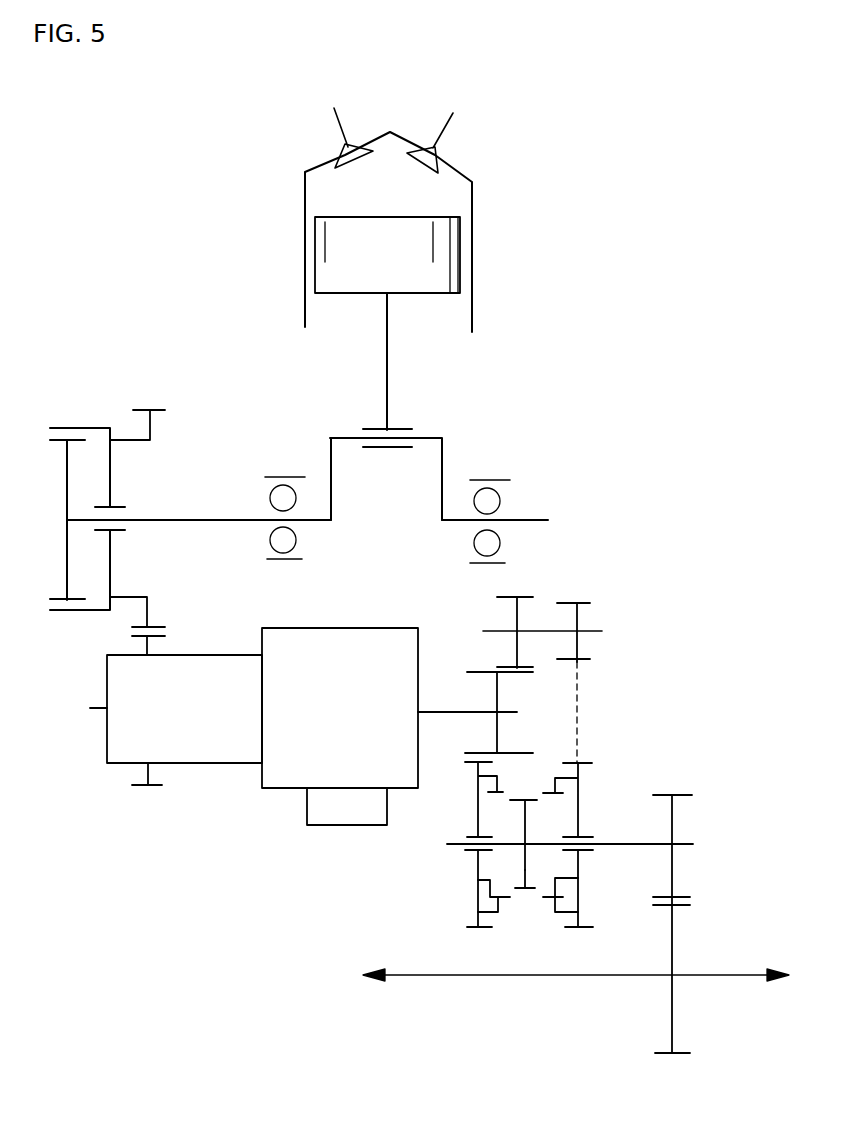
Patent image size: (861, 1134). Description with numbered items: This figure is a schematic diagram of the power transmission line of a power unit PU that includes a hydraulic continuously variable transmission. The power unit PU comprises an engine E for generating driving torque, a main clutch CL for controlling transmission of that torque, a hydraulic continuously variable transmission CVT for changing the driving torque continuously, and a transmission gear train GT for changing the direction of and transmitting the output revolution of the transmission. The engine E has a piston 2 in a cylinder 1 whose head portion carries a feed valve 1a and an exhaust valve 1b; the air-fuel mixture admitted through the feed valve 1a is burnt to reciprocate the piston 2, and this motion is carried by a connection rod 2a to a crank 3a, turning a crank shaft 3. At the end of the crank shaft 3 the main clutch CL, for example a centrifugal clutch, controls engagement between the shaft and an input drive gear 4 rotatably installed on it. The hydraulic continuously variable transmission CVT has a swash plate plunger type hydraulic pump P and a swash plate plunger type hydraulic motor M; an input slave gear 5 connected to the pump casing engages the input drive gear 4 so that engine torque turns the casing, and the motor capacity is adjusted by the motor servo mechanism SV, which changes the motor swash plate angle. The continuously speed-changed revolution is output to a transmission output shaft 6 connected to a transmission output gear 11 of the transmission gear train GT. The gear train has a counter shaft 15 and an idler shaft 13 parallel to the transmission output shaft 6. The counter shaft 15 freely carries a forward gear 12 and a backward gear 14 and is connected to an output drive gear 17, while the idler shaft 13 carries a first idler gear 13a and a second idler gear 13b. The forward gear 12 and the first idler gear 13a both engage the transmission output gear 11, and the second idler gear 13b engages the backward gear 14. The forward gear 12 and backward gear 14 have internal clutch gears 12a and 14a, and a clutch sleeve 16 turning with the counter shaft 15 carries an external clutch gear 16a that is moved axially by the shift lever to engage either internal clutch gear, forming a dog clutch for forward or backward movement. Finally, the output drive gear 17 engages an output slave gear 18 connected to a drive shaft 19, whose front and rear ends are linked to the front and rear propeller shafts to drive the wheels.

The cylinder 1 is at (475, 305).
The feed valve 1a is at (455, 120).
The exhaust valve 1b is at (332, 110).
The piston 2 is at (396, 266).
The connection rod 2a is at (388, 358).
The crank shaft 3 is at (207, 520).
The crank 3a is at (445, 437).
The input drive gear 4 is at (166, 410).
The input slave gear 5 is at (160, 787).
The transmission output shaft 6 is at (452, 712).
The transmission output gear 11 is at (478, 668).
The forward gear 12 is at (475, 928).
The internal clutch gear 12a is at (476, 878).
The idler shaft 13 is at (593, 630).
The first idler gear 13a is at (520, 597).
The second idler gear 13b is at (583, 603).
The backward gear 14 is at (583, 928).
The internal clutch gear 14a is at (582, 880).
The counter shaft 15 is at (618, 843).
The clutch sleeve 16 is at (525, 817).
The external clutch gear 16a is at (527, 890).
The output drive gear 17 is at (678, 797).
The output slave gear 18 is at (660, 1058).
The drive shaft 19 is at (612, 979).
The engine E is at (425, 247).
The power unit PU is at (683, 271).
The main clutch CL is at (38, 462).
The hydraulic continuously variable transmission CVT is at (254, 753).
The swash plate plunger type hydraulic pump P is at (193, 722).
The swash plate plunger type hydraulic motor M is at (357, 718).
The motor servo mechanism SV is at (337, 815).
The transmission gear train GT is at (544, 813).